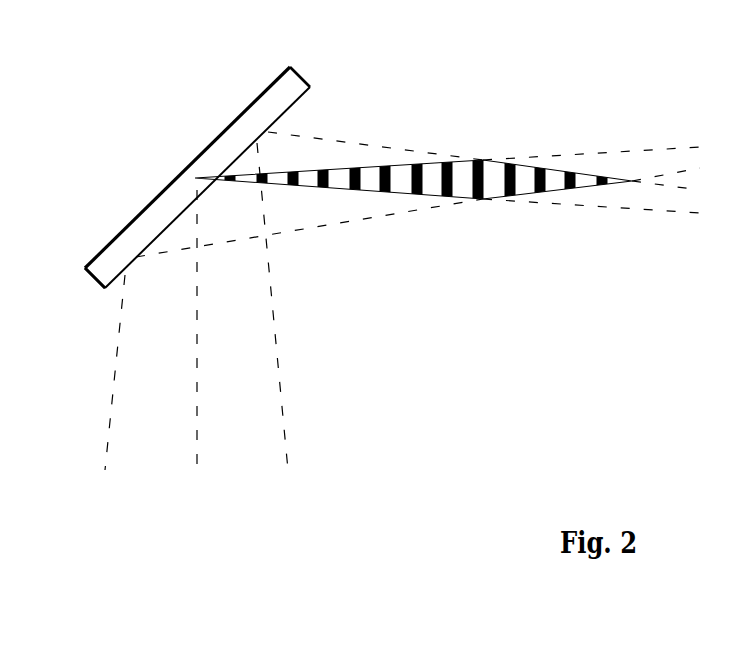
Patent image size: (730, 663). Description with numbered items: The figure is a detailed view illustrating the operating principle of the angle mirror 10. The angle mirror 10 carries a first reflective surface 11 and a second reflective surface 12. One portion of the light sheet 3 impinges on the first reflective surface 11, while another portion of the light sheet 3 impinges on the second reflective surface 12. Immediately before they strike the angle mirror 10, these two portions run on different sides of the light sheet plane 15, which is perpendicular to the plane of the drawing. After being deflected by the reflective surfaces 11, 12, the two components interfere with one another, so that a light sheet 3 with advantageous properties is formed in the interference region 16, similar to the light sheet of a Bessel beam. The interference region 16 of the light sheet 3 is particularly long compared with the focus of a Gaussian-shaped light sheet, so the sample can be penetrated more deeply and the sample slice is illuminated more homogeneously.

The angle mirror 10 is at (150, 122).
The first reflective surface 11 is at (117, 282).
The second reflective surface 12 is at (290, 105).
The light sheet 3 is at (563, 190).
The light sheet plane 15 is at (197, 438).
The interference region 16 is at (483, 130).